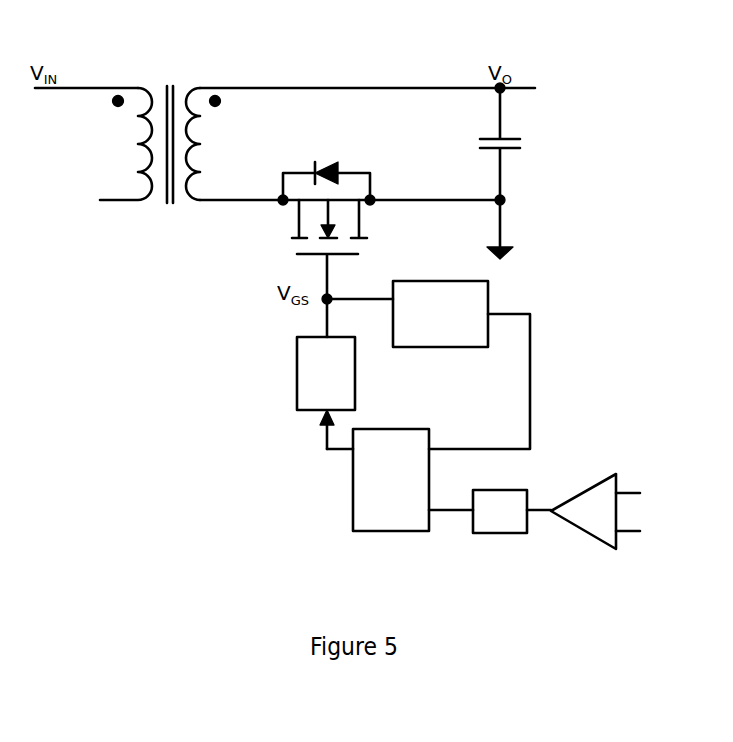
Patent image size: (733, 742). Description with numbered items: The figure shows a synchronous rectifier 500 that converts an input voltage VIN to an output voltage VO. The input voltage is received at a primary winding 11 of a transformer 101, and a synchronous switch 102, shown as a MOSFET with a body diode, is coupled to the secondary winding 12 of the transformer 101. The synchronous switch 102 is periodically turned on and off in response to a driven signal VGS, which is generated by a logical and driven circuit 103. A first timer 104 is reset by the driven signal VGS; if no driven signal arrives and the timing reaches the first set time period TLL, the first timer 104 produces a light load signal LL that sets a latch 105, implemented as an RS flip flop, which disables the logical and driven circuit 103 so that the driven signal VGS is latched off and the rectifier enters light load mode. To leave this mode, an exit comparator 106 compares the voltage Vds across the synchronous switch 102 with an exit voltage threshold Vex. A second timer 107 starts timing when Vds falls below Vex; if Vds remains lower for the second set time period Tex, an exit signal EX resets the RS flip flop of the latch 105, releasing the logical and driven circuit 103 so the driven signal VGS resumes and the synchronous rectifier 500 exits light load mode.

The synchronous rectifier 500 is at (103, 38).
The primary winding 11 is at (126, 144).
The secondary winding 12 is at (212, 144).
The transformer 101 is at (170, 207).
The synchronous switch 102 is at (374, 206).
The logical and driven circuit 103 is at (326, 393).
The first timer 104 is at (443, 349).
The latch 105 is at (400, 480).
The exit comparator 106 is at (611, 511).
The second timer 107 is at (498, 535).